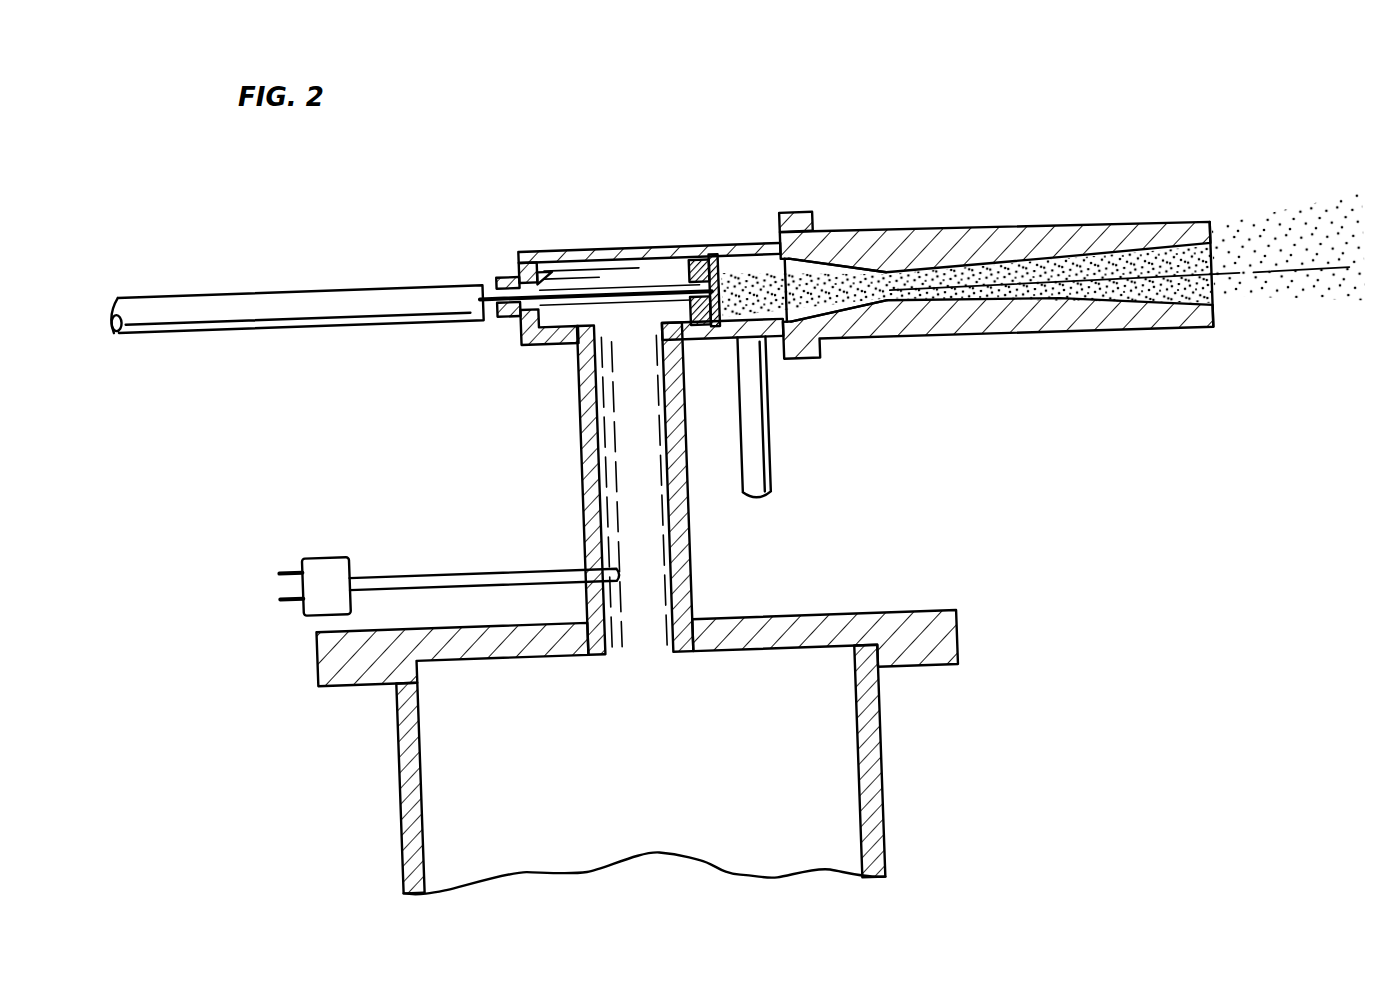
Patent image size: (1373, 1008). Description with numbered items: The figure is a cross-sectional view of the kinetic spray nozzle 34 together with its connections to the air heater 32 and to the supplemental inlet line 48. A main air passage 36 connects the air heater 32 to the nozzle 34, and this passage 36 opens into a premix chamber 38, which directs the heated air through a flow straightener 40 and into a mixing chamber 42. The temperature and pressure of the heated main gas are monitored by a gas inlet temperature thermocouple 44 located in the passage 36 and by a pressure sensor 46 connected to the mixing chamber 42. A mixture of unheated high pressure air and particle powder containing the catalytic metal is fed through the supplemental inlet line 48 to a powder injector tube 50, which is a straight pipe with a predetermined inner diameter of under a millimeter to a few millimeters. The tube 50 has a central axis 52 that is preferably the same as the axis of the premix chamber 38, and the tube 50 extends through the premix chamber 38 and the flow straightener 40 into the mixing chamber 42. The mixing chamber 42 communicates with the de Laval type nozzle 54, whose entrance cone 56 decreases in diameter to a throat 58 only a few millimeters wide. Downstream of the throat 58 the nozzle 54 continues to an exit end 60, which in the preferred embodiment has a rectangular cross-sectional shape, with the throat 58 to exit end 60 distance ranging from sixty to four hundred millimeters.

The air heater 32 is at (883, 821).
The nozzle 34 is at (799, 208).
The main air passage 36 is at (603, 548).
The premix chamber 38 is at (580, 250).
The flow straightener 40 is at (702, 262).
The mixing chamber 42 is at (724, 268).
The gas inlet temperature thermocouple 44 is at (322, 563).
The pressure sensor 46 is at (757, 467).
The supplemental inlet line 48 is at (207, 310).
The powder injector tube 50 is at (503, 283).
The central axis 52 is at (1287, 268).
The de Laval type nozzle 54 is at (996, 229).
The entrance cone 56 is at (834, 268).
The throat 58 is at (912, 296).
The exit end 60 is at (1218, 293).